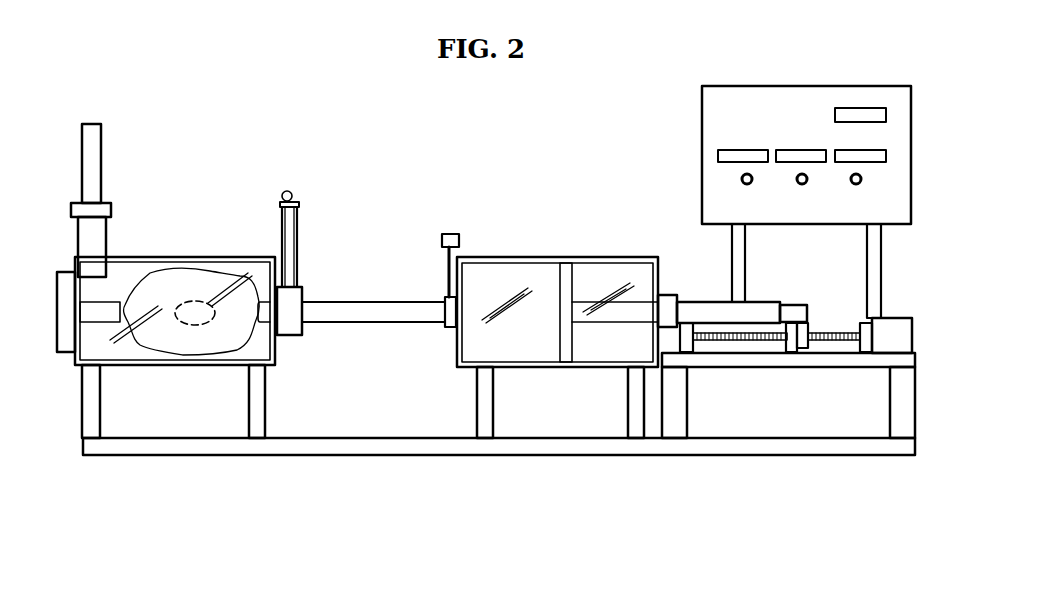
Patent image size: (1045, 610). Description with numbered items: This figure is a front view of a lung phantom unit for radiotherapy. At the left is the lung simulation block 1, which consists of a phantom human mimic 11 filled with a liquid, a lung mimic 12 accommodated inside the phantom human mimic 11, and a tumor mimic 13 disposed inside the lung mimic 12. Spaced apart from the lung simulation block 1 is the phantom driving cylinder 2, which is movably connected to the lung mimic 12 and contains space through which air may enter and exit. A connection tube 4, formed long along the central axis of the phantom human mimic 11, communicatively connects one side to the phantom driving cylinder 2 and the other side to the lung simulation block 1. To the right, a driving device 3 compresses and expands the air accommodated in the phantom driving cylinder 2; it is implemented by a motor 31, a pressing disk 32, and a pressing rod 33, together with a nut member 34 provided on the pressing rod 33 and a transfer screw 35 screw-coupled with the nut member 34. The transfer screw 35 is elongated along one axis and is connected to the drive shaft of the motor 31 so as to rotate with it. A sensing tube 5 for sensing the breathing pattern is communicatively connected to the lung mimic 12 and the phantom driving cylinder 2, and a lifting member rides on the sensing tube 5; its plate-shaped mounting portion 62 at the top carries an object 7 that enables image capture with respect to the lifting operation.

The lung simulation block 1 is at (247, 527).
The phantom human mimic 11 is at (122, 365).
The lung mimic 12 is at (172, 352).
The tumor mimic 13 is at (193, 318).
The phantom driving cylinder 2 is at (521, 245).
The driving device 3 is at (790, 528).
The motor 31 is at (890, 338).
The pressing disk 32 is at (563, 353).
The pressing rod 33 is at (608, 313).
The nut member 34 is at (790, 340).
The transfer screw 35 is at (737, 340).
The connection tube 4 is at (389, 292).
The sensing tube 5 is at (297, 245).
The mounting portion 62 is at (297, 203).
The object 7 is at (287, 190).